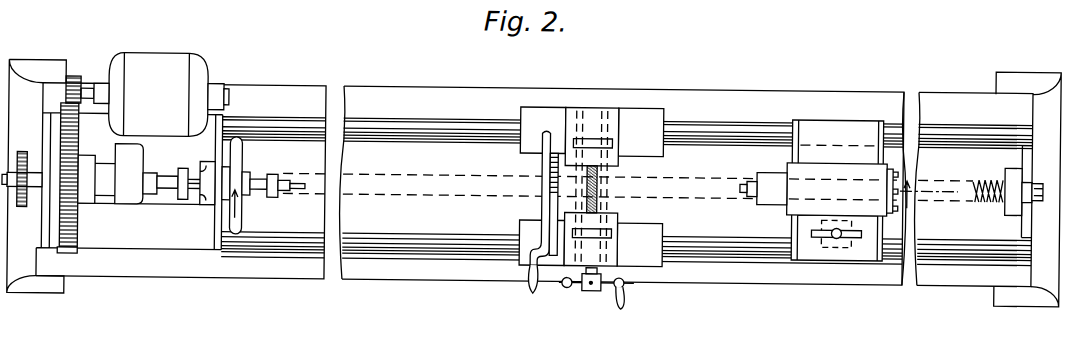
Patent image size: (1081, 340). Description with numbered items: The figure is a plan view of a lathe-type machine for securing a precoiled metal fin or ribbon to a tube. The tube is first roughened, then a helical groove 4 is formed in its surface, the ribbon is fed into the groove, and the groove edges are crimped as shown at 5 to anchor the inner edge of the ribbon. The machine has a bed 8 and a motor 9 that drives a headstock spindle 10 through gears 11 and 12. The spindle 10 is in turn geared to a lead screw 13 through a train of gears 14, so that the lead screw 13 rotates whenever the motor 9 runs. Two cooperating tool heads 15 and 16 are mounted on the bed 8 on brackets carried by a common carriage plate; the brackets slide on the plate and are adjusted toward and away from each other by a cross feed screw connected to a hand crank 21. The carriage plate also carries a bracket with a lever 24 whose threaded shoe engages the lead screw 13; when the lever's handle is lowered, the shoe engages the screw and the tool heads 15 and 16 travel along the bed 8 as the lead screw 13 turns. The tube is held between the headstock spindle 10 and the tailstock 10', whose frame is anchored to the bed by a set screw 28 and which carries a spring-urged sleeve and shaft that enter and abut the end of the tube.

The helical groove 4 is at (543, 32).
The crimped groove edges 5 is at (573, 200).
The bed 8 is at (848, 98).
The motor 9 is at (162, 61).
The headstock spindle 10 is at (268, 141).
The tailstock 10' is at (834, 155).
The gear 11 is at (79, 77).
The gear 12 is at (78, 138).
The lead screw 13 is at (983, 171).
The train of gears 14 is at (29, 168).
The tool head 15 is at (617, 154).
The tool head 16 is at (612, 216).
The hand crank 21 is at (623, 288).
The lever 24 is at (547, 160).
The set screw 28 is at (835, 230).